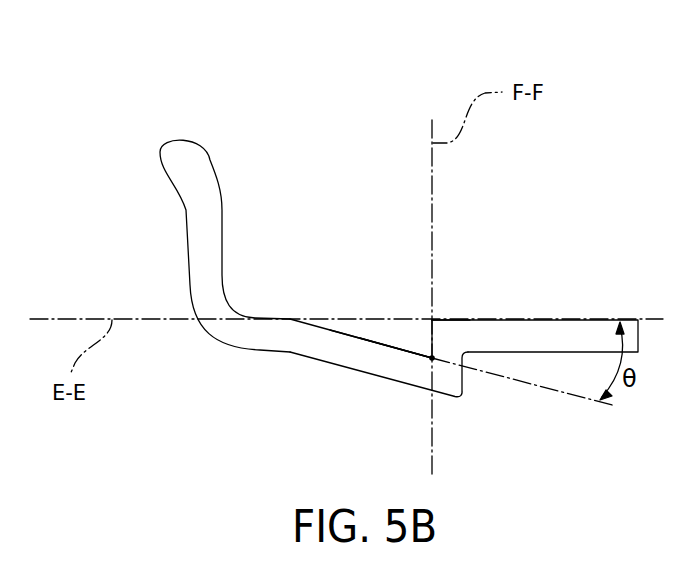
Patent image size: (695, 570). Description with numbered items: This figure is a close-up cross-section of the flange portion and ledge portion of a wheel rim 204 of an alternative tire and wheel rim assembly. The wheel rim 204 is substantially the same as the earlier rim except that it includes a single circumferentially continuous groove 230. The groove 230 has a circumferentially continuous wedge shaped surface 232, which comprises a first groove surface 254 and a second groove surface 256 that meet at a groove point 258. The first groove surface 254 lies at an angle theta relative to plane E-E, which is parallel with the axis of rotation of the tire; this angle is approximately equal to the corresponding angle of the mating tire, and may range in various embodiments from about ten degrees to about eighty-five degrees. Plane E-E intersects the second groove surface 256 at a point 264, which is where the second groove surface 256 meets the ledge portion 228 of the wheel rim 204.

The wheel rim 204 is at (158, 121).
The ledge portion 228 is at (535, 310).
The groove 230 is at (407, 333).
The wedge shaped surface 232 is at (363, 338).
The first groove surface 254 is at (340, 333).
The second groove surface 256 is at (434, 338).
The groove point 258 is at (432, 358).
The point 264 is at (434, 338).